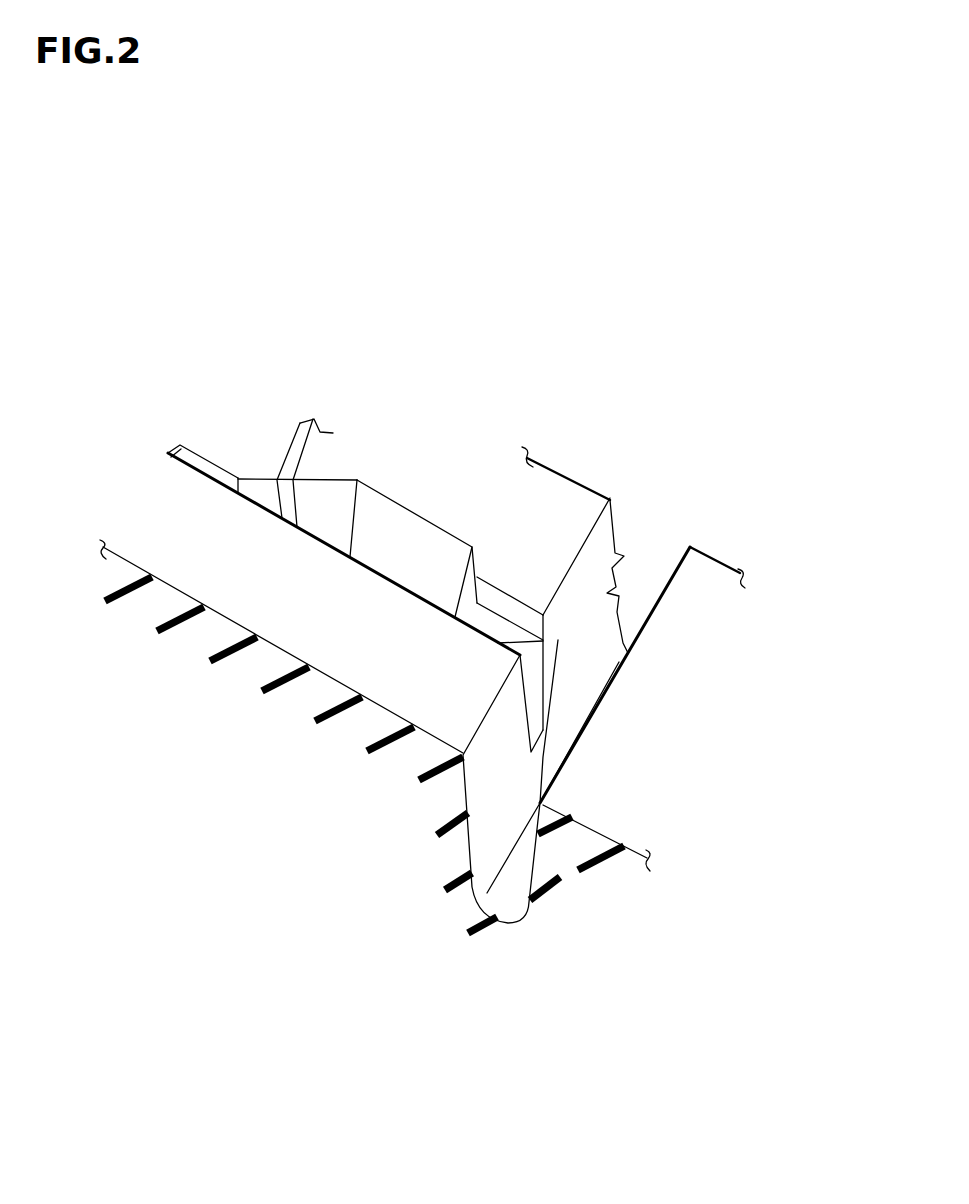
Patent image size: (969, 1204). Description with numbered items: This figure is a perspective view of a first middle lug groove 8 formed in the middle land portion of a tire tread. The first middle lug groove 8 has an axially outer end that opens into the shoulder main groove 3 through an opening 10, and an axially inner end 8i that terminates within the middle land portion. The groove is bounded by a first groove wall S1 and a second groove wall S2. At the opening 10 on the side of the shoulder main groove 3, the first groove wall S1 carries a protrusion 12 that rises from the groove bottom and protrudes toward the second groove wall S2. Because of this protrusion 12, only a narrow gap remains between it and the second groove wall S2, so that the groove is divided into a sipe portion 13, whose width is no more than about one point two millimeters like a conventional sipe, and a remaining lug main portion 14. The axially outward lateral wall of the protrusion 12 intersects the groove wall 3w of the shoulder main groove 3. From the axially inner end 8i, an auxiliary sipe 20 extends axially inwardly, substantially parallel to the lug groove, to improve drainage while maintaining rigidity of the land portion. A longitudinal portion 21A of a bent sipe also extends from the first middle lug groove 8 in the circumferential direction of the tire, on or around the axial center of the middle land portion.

The shoulder main groove 3 is at (517, 892).
The groove wall of the shoulder main groove 3w is at (600, 553).
The first middle lug groove 8 is at (225, 858).
The axially inner end 8i is at (238, 472).
The opening 10 is at (534, 674).
The protrusion 12 is at (497, 632).
The sipe portion 13 is at (544, 714).
The lug main portion 14 is at (412, 558).
The auxiliary sipe 20 is at (200, 462).
The longitudinal portion 21A is at (298, 440).
The first groove wall S1 is at (420, 517).
The second groove wall S2 is at (305, 530).